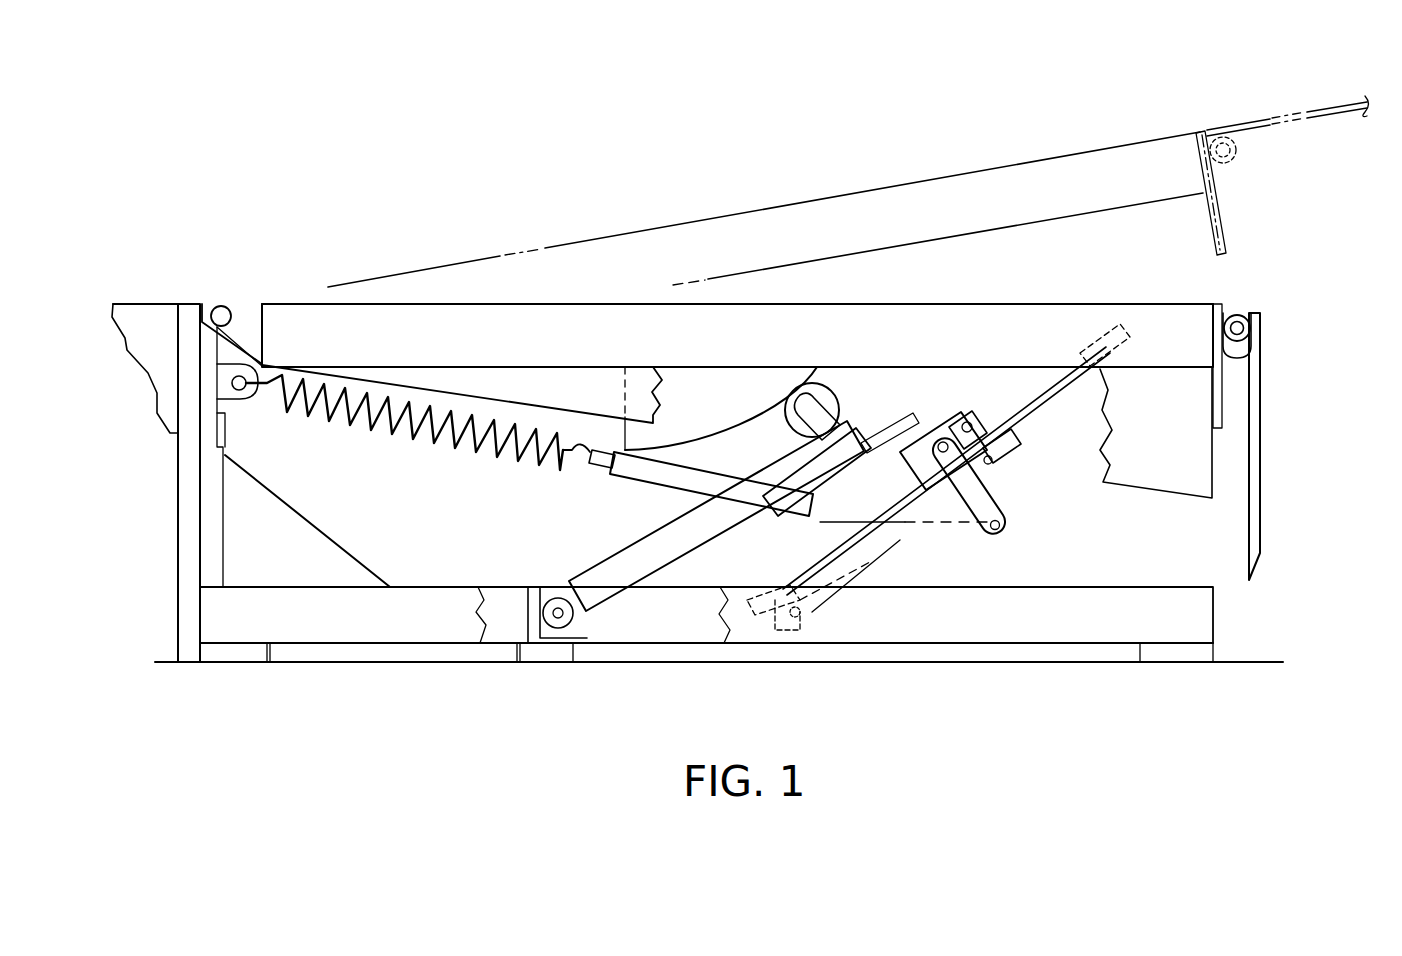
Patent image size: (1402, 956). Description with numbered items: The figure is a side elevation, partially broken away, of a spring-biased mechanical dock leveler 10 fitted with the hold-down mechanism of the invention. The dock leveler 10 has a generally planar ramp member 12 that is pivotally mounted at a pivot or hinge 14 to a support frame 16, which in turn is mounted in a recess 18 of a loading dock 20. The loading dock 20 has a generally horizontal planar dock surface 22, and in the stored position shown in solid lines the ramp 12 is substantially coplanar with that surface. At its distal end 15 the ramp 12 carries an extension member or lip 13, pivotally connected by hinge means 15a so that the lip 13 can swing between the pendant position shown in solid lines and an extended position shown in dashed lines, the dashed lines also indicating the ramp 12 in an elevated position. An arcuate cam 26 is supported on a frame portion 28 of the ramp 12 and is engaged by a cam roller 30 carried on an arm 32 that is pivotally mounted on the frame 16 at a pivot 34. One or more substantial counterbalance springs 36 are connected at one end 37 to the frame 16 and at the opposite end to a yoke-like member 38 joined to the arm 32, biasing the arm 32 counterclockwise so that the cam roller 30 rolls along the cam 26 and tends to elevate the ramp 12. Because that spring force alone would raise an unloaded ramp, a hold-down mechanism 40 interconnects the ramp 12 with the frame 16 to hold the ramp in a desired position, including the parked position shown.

The dock leveler 10 is at (648, 195).
The ramp member 12 is at (855, 192).
The lip 13 is at (1255, 121).
The pivot or hinge 14 is at (223, 305).
The distal end 15 is at (1224, 358).
The hinge means 15a is at (1240, 313).
The support frame 16 is at (178, 396).
The recess 18 is at (250, 652).
The loading dock 20 is at (157, 300).
The dock surface 22 is at (130, 300).
The arcuate cam 26 is at (737, 420).
The frame portion 28 is at (682, 332).
The cam roller 30 is at (838, 391).
The arm 32 is at (630, 553).
The pivot 34 is at (558, 630).
The counterbalance springs 36 is at (418, 433).
The spring end 37 is at (240, 400).
The yoke-like member 38 is at (788, 509).
The hold-down mechanism 40 is at (1020, 503).